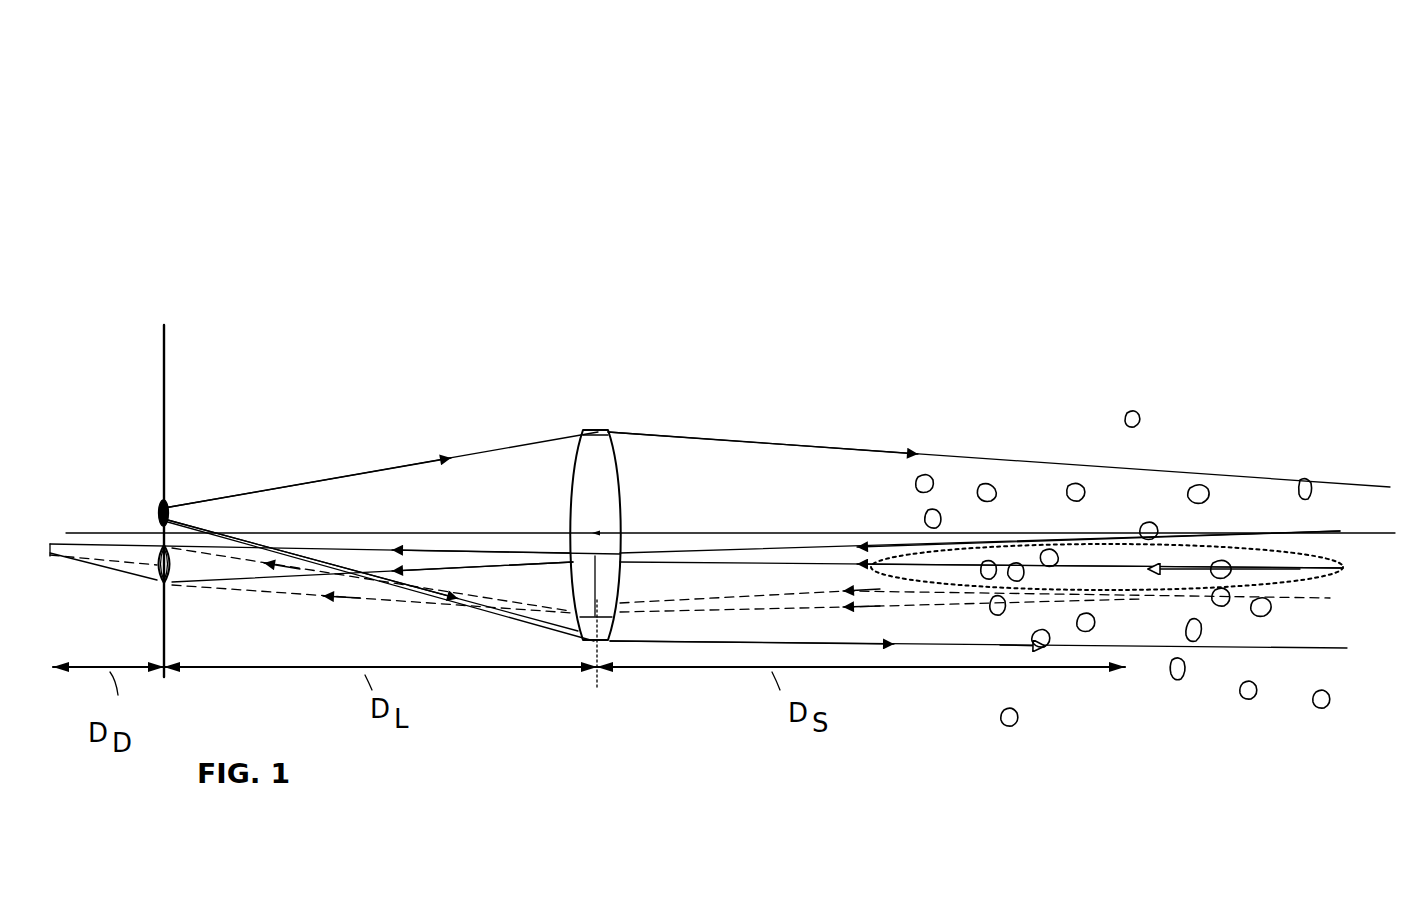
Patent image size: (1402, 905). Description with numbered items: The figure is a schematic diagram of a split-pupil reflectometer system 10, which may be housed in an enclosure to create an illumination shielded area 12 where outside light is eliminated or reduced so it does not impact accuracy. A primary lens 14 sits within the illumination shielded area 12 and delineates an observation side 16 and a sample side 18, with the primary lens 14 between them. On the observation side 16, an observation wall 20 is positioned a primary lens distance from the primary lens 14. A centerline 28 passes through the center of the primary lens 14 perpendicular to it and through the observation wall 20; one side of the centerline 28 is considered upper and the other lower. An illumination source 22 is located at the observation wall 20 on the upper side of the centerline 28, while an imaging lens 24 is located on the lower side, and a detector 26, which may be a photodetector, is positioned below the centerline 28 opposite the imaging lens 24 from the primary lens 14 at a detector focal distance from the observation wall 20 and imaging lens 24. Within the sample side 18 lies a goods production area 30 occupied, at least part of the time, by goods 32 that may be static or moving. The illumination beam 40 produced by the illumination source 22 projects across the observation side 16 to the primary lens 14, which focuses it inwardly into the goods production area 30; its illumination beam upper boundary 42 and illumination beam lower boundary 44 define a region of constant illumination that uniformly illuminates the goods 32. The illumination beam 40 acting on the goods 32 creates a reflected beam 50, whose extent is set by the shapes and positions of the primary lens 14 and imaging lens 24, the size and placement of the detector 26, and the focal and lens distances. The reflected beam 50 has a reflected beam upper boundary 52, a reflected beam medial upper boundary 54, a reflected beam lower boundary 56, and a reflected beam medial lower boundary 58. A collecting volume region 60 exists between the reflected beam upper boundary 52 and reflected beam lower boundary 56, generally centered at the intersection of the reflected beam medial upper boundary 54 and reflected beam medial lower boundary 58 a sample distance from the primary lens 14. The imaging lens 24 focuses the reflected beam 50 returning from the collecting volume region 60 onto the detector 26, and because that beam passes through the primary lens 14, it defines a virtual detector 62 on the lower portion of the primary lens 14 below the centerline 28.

The split-pupil reflectometer system 10 is at (474, 262).
The illumination shielded area 12 is at (887, 322).
The primary lens 14 is at (612, 445).
The observation side 16 is at (526, 322).
The sample side 18 is at (669, 312).
The observation wall 20 is at (167, 383).
The illumination source 22 is at (160, 515).
The imaging lens 24 is at (153, 579).
The detector 26 is at (50, 552).
The centerline 28 is at (680, 527).
The goods production area 30 is at (1024, 375).
The goods 32 is at (1212, 482).
The illumination beam 40 is at (540, 472).
The illumination beam upper boundary 42 is at (485, 447).
The illumination beam lower boundary 44 is at (535, 625).
The reflected beam 50 is at (485, 583).
The reflected beam upper boundary 52 is at (420, 567).
The reflected beam medial upper boundary 54 is at (323, 550).
The reflected beam lower boundary 56 is at (532, 605).
The reflected beam medial lower boundary 58 is at (277, 590).
The collecting volume region 60 is at (1273, 587).
The virtual detector 62 is at (600, 598).